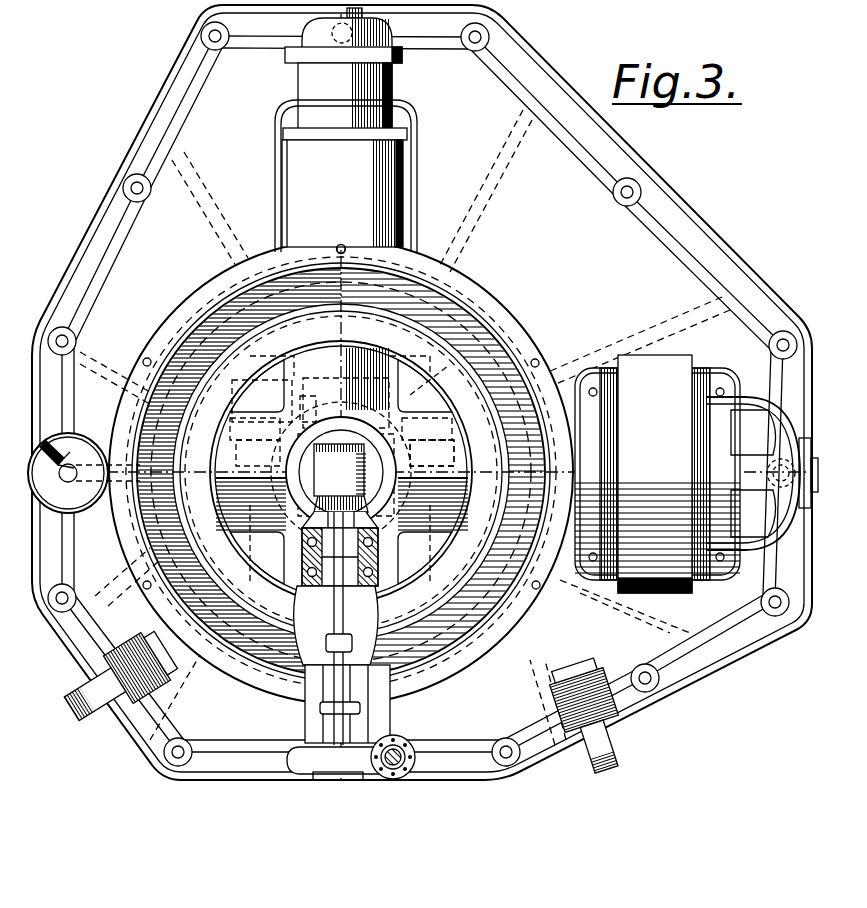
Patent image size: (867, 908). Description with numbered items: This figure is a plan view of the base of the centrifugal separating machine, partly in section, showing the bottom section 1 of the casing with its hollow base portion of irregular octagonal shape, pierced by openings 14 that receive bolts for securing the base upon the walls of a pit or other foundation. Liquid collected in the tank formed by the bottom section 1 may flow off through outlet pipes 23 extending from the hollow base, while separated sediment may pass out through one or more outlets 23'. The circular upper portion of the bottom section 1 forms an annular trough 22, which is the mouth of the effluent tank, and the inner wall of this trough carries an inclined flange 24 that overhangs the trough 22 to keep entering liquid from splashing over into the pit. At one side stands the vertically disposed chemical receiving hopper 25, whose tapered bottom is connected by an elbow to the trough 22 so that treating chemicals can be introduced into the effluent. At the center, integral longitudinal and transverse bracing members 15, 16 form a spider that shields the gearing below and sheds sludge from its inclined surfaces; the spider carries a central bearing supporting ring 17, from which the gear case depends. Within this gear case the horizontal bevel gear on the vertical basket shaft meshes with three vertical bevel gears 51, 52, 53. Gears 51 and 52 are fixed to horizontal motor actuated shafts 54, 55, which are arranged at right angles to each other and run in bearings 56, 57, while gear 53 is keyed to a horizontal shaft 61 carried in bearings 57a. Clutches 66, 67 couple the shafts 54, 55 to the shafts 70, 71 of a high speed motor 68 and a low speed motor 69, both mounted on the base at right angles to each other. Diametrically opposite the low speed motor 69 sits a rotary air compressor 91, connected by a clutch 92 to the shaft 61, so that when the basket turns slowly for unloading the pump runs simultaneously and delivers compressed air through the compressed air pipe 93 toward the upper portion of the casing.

The bottom section 1 is at (522, 606).
The openings 14 is at (630, 191).
The longitudinal bracing member 15 is at (448, 418).
The transverse bracing member 16 is at (330, 350).
The bearing supporting ring 17 is at (293, 462).
The annular trough 22 is at (500, 348).
The outlet pipes 23 is at (119, 690).
The outlets 23' is at (586, 725).
The inclined flange 24 is at (530, 344).
The chemical receiving hopper 25 is at (96, 435).
The vertical bevel gear 51 is at (370, 466).
The vertical bevel gear 52 is at (344, 450).
The vertical bevel gear 53 is at (350, 505).
The motor actuated shaft 54 is at (440, 466).
The motor actuated shaft 55 is at (300, 404).
The bearing 56 is at (450, 408).
The bearing 57 is at (300, 386).
The bearings 57a is at (330, 596).
The horizontal shaft 61 is at (338, 624).
The clutch 66 is at (512, 438).
The clutch 67 is at (424, 262).
The high speed motor 68 is at (696, 474).
The low speed motor 69 is at (344, 127).
The motor shaft 70 is at (542, 512).
The motor shaft 71 is at (332, 246).
The rotary air compressor 91 is at (310, 766).
The clutch 92 is at (352, 621).
The compressed air pipe 93 is at (410, 760).